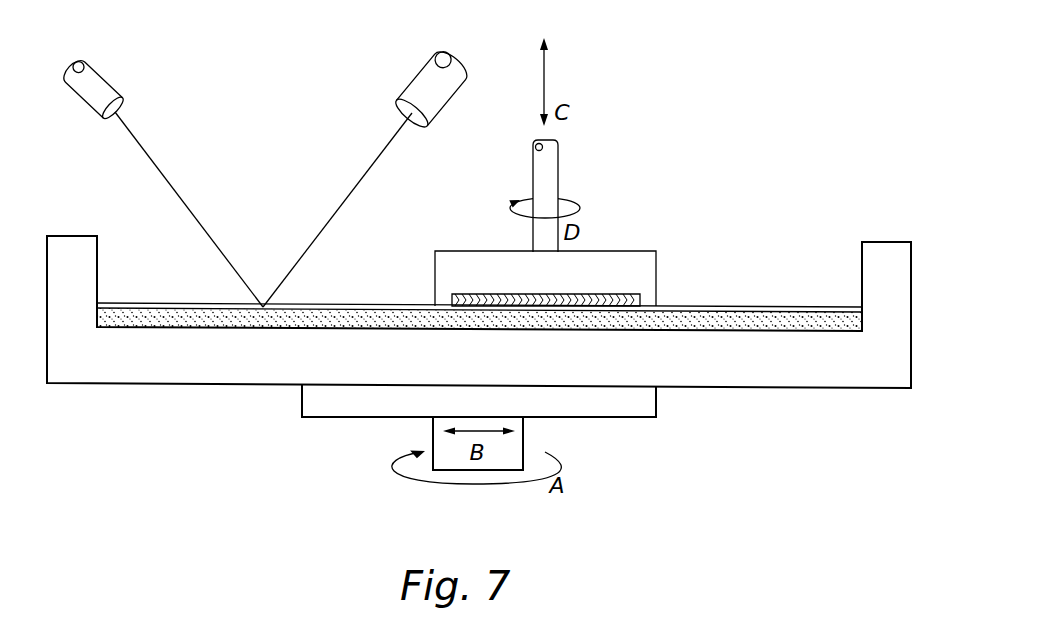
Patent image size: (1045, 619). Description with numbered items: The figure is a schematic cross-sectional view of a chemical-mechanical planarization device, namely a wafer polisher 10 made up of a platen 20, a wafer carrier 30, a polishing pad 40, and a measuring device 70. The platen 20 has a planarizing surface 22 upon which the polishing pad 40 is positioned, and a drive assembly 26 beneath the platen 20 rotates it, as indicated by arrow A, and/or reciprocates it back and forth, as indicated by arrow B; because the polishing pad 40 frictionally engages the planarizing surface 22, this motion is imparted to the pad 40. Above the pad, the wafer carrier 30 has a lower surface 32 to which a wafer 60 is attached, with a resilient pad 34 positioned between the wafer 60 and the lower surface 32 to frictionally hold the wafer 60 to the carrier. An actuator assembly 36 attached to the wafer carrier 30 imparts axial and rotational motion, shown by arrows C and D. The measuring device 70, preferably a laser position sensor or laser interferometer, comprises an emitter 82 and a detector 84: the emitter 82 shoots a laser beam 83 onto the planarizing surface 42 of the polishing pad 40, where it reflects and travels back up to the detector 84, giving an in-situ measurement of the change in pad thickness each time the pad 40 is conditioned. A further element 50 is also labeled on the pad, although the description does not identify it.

The wafer polisher 10 is at (638, 38).
The platen 20 is at (493, 369).
The planarizing surface 22 is at (692, 310).
The drive assembly 26 is at (552, 431).
The wafer carrier 30 is at (541, 280).
The lower surface 32 is at (464, 307).
The resilient pad 34 is at (530, 299).
The actuator assembly 36 is at (578, 150).
The polishing pad 40 is at (267, 313).
The planarizing surface 42 is at (195, 306).
The pad top layer 50 is at (353, 307).
The wafer 60 is at (593, 299).
The measuring device 70 is at (375, 67).
The emitter 82 is at (88, 104).
The laser beam 83 is at (190, 208).
The detector 84 is at (450, 104).